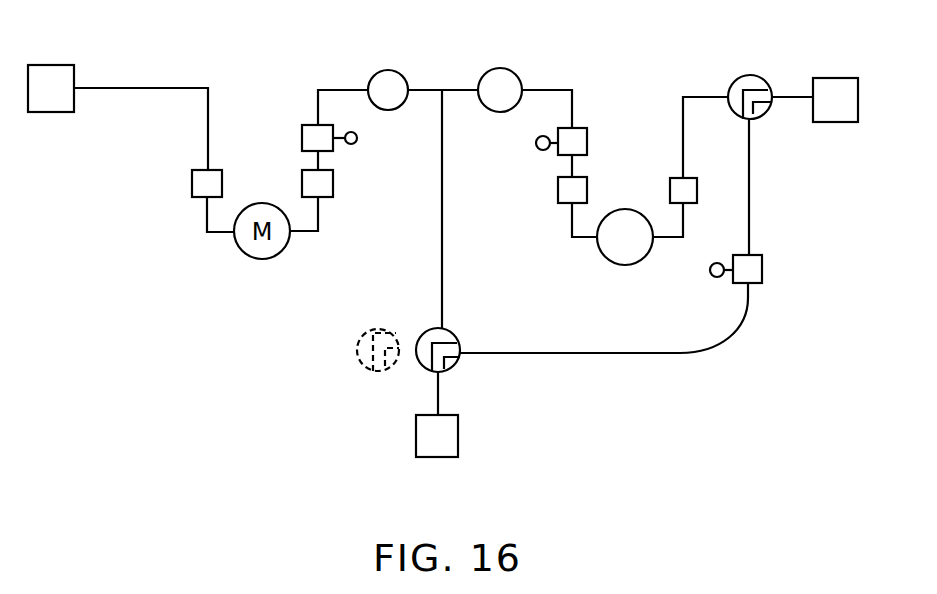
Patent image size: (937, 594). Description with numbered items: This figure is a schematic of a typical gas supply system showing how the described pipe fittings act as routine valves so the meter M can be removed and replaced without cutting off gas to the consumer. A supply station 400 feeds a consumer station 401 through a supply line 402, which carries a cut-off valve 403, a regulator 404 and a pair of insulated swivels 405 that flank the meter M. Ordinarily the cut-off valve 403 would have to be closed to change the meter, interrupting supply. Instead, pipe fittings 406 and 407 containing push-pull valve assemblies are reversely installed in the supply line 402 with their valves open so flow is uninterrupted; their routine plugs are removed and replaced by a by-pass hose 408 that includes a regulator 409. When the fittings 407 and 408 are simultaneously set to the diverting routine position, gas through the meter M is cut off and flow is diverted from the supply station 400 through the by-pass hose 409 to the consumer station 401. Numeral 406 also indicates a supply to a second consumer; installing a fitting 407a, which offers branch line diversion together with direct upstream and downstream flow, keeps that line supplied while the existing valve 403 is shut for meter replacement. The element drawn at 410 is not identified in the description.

The supply station 400 is at (458, 435).
The consumer station 401 is at (843, 122).
The supply line 402 is at (790, 97).
The cut-off valve 403 is at (510, 73).
The regulator 404 is at (558, 148).
The insulated swivels 405 is at (558, 205).
The pipe fitting 406 is at (421, 90).
The pipe fitting 407 is at (432, 330).
The fitting 407a is at (357, 342).
The by-pass hose 408 is at (741, 78).
The regulator 409 is at (600, 340).
The switch 410 is at (762, 275).